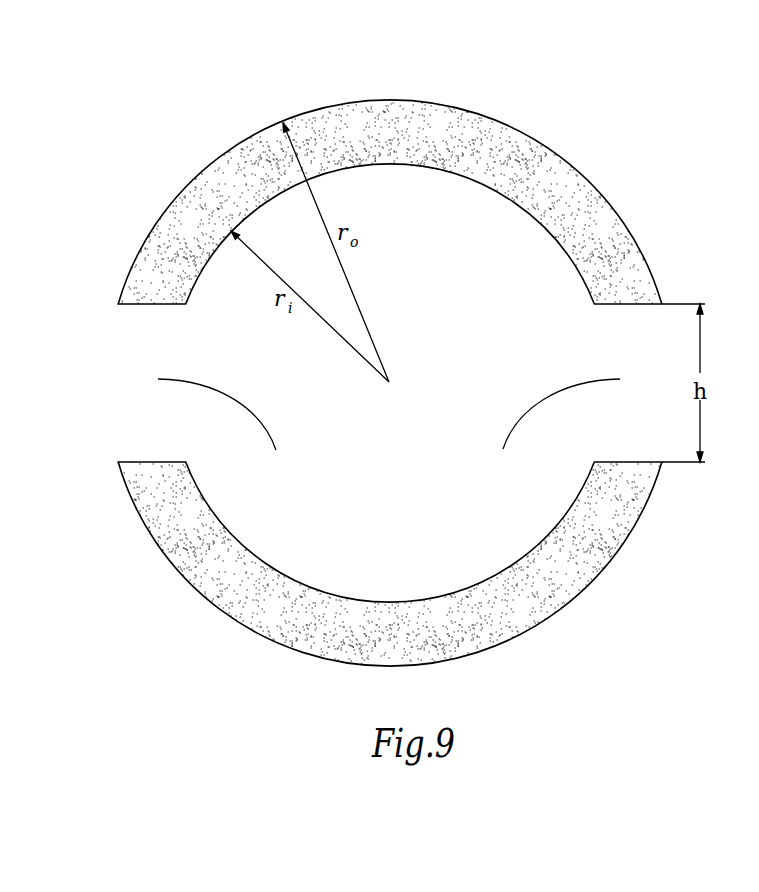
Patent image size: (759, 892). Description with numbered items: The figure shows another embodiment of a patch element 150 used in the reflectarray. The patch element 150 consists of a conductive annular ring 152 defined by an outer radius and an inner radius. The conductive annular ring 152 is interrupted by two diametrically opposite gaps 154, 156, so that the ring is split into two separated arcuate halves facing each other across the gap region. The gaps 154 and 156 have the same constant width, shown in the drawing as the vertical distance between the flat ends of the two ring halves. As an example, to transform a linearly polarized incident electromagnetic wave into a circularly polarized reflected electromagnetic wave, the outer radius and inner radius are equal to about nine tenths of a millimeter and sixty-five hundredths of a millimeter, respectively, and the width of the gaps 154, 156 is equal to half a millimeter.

The patch element 150 is at (661, 60).
The conductive annular ring 152 is at (603, 228).
The gap 154 is at (550, 430).
The gap 156 is at (232, 430).